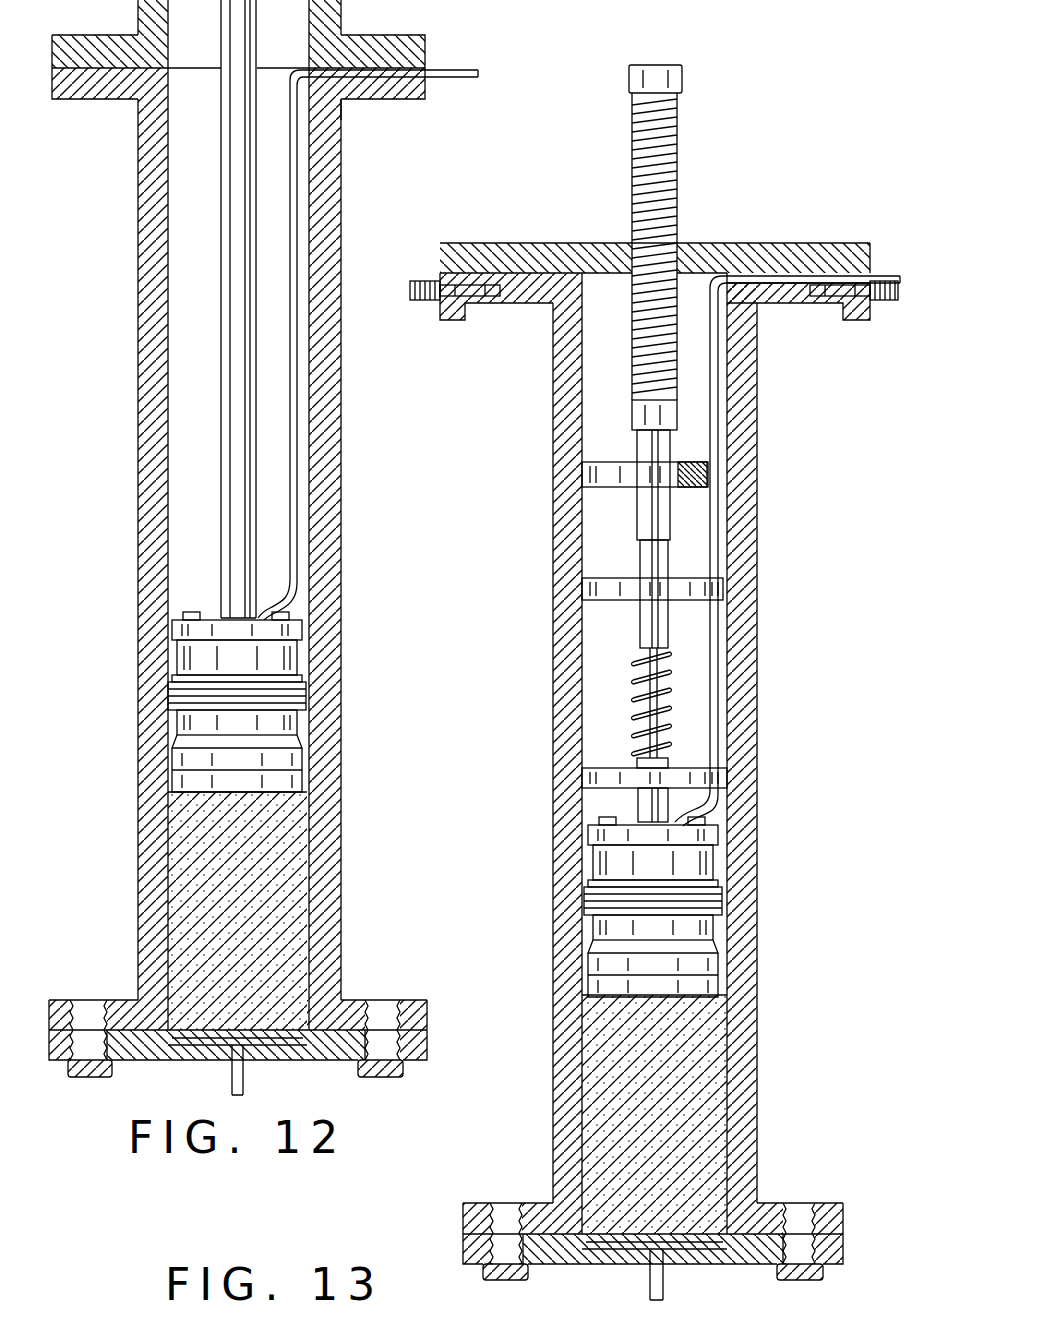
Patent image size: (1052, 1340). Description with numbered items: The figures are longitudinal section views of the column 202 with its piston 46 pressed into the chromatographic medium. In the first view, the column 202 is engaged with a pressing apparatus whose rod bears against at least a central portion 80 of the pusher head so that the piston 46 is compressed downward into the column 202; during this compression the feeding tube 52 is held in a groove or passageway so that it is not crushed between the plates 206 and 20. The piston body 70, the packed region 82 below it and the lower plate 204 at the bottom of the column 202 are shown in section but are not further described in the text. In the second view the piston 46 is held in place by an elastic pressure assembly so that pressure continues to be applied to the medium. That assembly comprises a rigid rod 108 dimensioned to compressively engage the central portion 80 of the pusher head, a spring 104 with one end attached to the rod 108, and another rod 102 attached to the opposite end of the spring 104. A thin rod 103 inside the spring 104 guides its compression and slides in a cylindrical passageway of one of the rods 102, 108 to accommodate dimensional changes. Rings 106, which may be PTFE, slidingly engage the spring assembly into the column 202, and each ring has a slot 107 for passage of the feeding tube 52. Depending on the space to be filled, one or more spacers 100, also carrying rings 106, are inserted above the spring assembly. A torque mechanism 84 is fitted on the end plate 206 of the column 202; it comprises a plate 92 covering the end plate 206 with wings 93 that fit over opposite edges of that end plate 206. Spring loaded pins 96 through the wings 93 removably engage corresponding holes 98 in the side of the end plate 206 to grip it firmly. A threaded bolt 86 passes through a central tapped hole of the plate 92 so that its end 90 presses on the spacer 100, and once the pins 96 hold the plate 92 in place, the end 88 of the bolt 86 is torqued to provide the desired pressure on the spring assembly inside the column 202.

In FIG. 12, the plate 20 is at (239, 48).
In FIG. 12, the piston 46 is at (183, 795).
In FIG. 13, the piston 46 is at (705, 954).
In FIG. 12, the feeding tube 52 is at (455, 68).
In FIG. 13, the feeding tube 52 is at (883, 276).
In FIG. 12, the piston 70 is at (172, 699).
In FIG. 13, the piston 70 is at (705, 890).
In FIG. 12, the central portion of pusher head 80 is at (186, 598).
In FIG. 13, the central portion of pusher head 80 is at (704, 814).
In FIG. 12, the fill material 82 is at (270, 892).
In FIG. 13, the fill material 82 is at (700, 1057).
In FIG. 13, the torque mechanism 84 is at (714, 200).
In FIG. 13, the threaded bolt 86 is at (675, 152).
In FIG. 13, the end of bolt 88 is at (656, 65).
In FIG. 13, the end of threaded bolt 90 is at (680, 420).
In FIG. 13, the plate 92 is at (778, 243).
In FIG. 13, the wings 93 is at (452, 320).
In FIG. 13, the spring loaded pins 96 is at (410, 290).
In FIG. 13, the holes 98 is at (470, 303).
In FIG. 13, the spacers 100 is at (668, 518).
In FIG. 13, the rod 102 is at (665, 625).
In FIG. 13, the thin rod 103 is at (665, 660).
In FIG. 13, the spring 104 is at (668, 698).
In FIG. 13, the rings 106 is at (590, 485).
In FIG. 13, the slots 107 is at (705, 488).
In FIG. 13, the rigid rod 108 is at (640, 805).
In FIG. 12, the column 202 is at (138, 612).
In FIG. 12, the bottom plate 204 is at (165, 1062).
In FIG. 13, the bottom plate 204 is at (607, 1266).
In FIG. 12, the end plate 206 is at (380, 100).
In FIG. 13, the end plate 206 is at (522, 303).